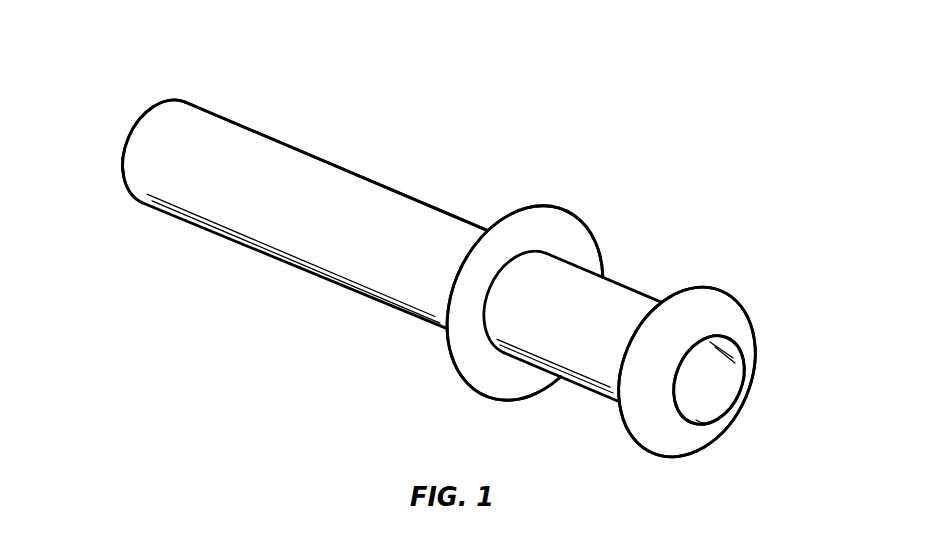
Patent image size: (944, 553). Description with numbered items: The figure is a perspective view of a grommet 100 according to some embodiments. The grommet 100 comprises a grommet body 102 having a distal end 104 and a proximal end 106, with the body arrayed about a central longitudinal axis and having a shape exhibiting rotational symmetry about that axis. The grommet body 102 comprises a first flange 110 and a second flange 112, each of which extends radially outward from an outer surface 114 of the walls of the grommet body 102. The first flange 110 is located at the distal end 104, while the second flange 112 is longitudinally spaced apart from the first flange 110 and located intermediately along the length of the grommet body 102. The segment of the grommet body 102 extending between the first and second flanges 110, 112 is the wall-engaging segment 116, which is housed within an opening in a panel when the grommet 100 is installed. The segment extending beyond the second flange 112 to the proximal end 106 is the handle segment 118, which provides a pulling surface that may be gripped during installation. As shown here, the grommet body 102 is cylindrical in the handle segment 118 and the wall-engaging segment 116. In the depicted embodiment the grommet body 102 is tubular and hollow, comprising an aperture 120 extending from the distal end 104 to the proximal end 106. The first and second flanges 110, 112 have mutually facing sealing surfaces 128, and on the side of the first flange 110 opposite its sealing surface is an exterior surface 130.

The grommet 100 is at (652, 128).
The grommet body 102 is at (186, 103).
The distal end 104 is at (712, 420).
The proximal end 106 is at (130, 130).
The first flange 110 is at (703, 288).
The second flange 112 is at (563, 209).
The outer surface 114 is at (278, 166).
The wall-engaging segment 116 is at (578, 387).
The handle segment 118 is at (168, 217).
The aperture 120 is at (712, 377).
The sealing surfaces 128 is at (566, 250).
The exterior surface 130 is at (688, 310).